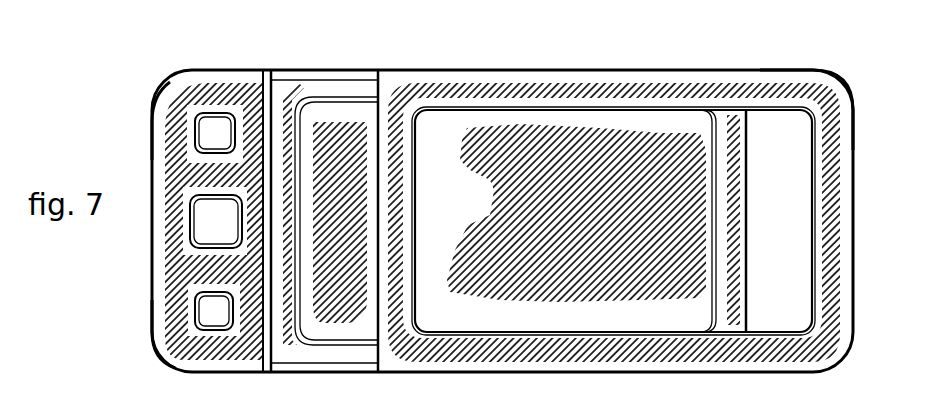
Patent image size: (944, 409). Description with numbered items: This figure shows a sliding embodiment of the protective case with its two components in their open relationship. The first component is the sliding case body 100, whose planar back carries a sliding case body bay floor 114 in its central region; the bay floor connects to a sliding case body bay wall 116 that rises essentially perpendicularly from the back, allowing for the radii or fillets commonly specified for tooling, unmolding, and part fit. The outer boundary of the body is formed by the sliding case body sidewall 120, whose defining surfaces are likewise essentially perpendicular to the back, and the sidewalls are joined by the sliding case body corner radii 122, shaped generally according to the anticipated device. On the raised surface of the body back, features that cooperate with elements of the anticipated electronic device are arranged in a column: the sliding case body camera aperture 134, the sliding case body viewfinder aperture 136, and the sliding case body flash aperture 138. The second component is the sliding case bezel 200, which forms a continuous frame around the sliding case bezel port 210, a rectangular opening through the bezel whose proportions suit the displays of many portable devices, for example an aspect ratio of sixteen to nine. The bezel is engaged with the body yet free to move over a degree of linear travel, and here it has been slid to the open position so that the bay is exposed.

The sliding case body 100 is at (168, 82).
The sliding case body sidewall 120 is at (154, 122).
The sliding case body corner radii 122 is at (165, 359).
The sliding case body camera aperture 134 is at (190, 218).
The sliding case body viewfinder aperture 136 is at (195, 133).
The sliding case body flash aperture 138 is at (195, 308).
The sliding case body bay wall 116 is at (348, 346).
The sliding case body bay floor 114 is at (613, 221).
The sliding case bezel 200 is at (793, 70).
The sliding case bezel port 210 is at (768, 332).